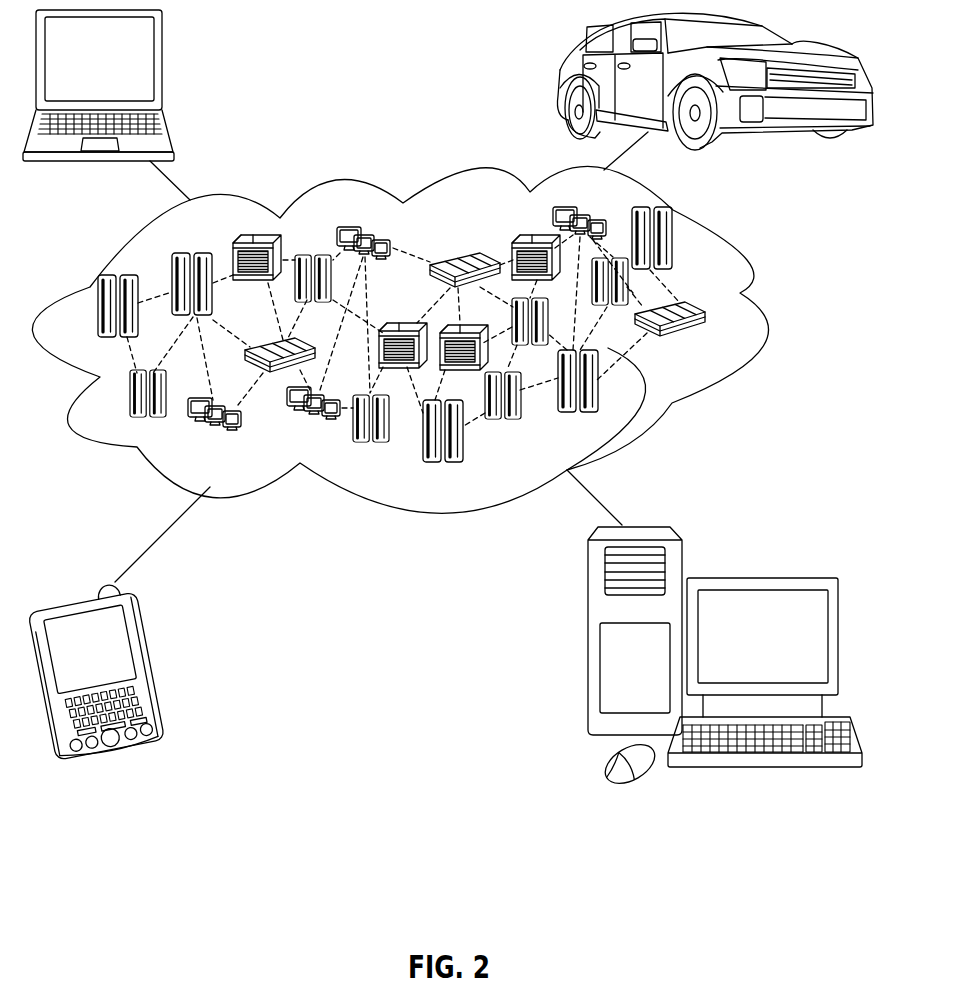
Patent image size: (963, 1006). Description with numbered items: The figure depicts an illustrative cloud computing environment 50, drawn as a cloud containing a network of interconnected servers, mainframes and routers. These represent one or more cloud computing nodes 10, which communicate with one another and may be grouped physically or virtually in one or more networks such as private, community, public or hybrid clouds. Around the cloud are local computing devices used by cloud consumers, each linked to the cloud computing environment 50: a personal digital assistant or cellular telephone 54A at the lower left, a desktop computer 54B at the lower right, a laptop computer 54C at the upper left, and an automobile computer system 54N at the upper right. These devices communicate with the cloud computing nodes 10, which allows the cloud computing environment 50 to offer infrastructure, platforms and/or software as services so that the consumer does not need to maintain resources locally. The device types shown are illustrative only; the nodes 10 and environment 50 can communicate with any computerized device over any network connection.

The cloud computing node 10 is at (706, 343).
The cloud computing environment 50 is at (762, 313).
The personal digital assistant or cellular telephone 54A is at (153, 662).
The desktop computer 54B is at (760, 578).
The laptop computer 54C is at (163, 65).
The automobile computer system 54N is at (558, 80).